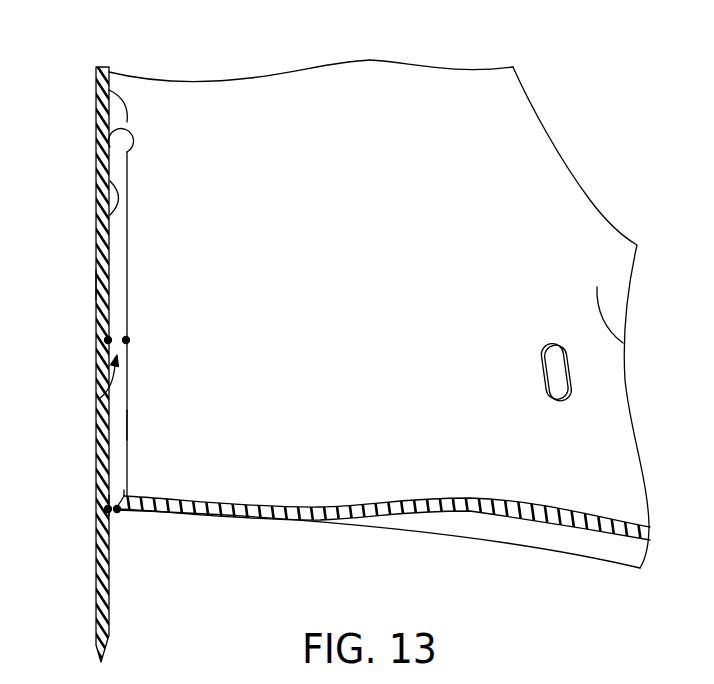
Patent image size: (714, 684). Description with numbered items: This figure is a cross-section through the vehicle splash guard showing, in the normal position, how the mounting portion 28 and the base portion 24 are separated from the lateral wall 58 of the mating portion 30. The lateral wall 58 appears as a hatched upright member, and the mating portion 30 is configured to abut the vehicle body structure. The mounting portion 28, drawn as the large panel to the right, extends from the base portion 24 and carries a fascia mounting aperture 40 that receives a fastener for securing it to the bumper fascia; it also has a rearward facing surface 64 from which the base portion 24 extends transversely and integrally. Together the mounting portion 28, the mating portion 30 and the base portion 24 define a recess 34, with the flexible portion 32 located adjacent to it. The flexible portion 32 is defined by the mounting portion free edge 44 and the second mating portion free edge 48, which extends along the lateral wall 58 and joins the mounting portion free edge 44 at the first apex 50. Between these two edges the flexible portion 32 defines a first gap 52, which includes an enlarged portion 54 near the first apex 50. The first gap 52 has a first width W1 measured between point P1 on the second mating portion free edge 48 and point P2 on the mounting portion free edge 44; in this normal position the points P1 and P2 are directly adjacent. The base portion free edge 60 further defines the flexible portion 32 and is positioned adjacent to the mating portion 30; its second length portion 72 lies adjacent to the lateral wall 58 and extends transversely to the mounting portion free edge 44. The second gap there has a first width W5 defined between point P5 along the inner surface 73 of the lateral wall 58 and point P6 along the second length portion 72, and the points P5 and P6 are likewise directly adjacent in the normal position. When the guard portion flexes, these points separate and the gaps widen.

The base portion 24 is at (616, 518).
The mounting portion 28 is at (558, 220).
The mating portion 30 is at (88, 226).
The flexible portion 32 is at (154, 190).
The recess 34 is at (378, 113).
The fascia mounting aperture 40 is at (553, 370).
The mounting portion free edge 44 is at (126, 424).
The second mating portion free edge 48 is at (110, 254).
The first apex 50 is at (108, 97).
The first gap 52 is at (100, 398).
The enlarged portion 54 is at (122, 140).
The lateral wall 58 is at (103, 283).
The base portion free edge 60 is at (124, 494).
The rearward facing surface 64 is at (624, 344).
The second length portion 72 is at (116, 503).
The inner surface 73 is at (113, 186).
The point P1 is at (106, 341).
The point P2 is at (129, 340).
The point P5 is at (106, 510).
The point P6 is at (118, 512).
The first width W1 is at (70, 306).
The first width W5 is at (78, 557).